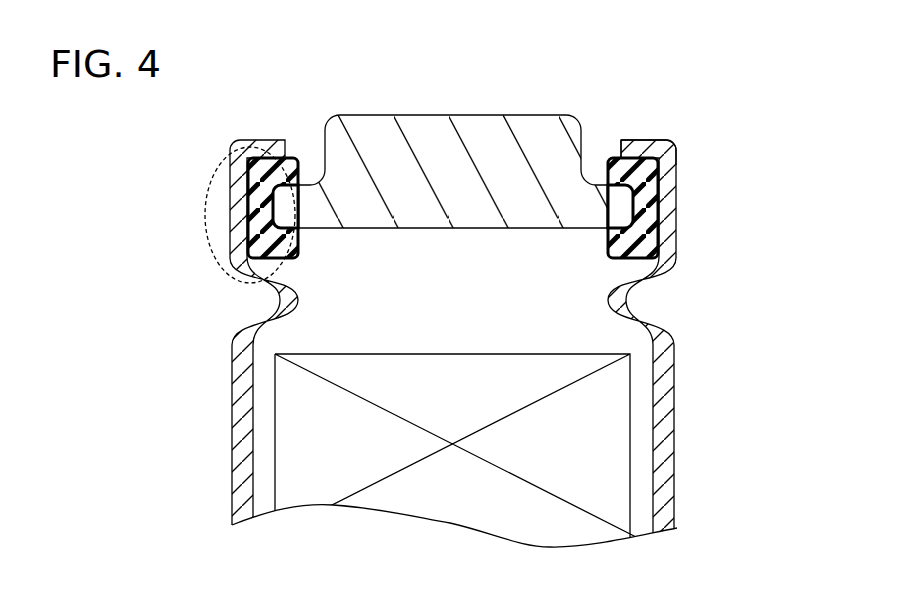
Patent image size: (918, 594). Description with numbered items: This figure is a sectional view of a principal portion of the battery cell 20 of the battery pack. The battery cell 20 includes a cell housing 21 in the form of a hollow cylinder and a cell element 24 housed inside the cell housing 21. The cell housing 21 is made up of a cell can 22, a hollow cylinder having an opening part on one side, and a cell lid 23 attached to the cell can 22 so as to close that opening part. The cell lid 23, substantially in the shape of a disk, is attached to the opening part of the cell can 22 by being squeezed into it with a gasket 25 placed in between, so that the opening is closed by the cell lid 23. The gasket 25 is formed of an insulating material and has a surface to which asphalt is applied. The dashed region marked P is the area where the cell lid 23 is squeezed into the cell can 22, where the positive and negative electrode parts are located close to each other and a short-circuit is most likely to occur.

The battery cell 20 is at (208, 410).
The cell housing 21 is at (483, 47).
The cell can 22 is at (637, 138).
The cell lid 23 is at (500, 127).
The cell element 24 is at (605, 422).
The gasket 25 is at (262, 157).
The area P is at (203, 215).